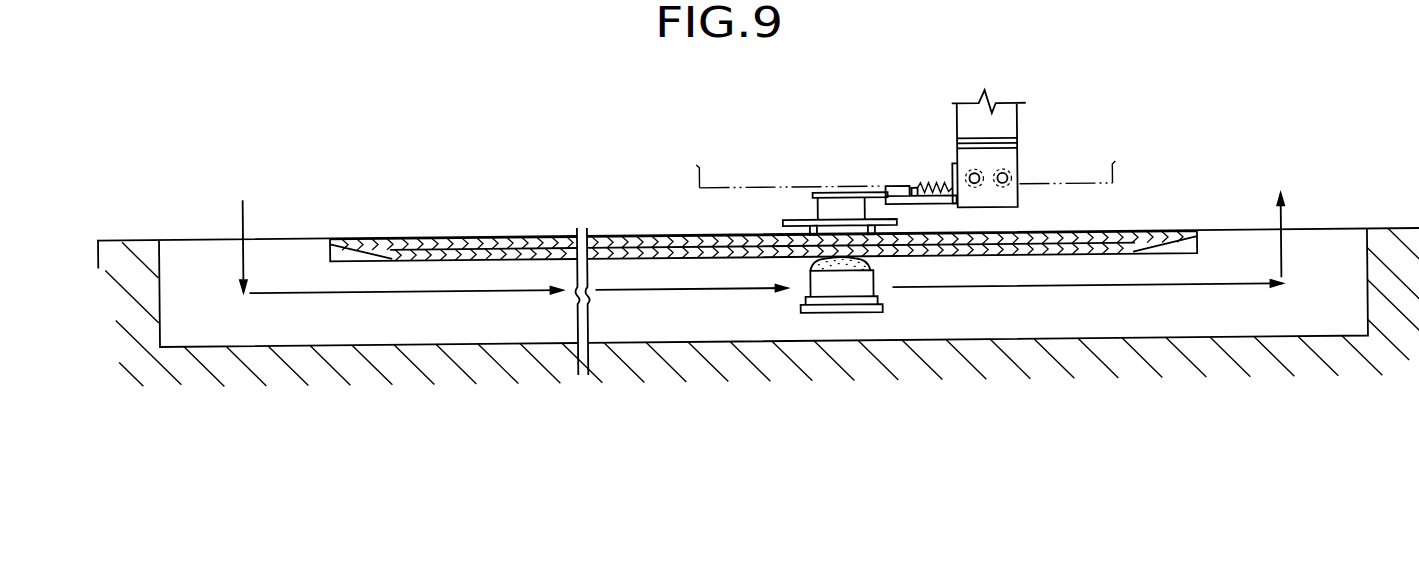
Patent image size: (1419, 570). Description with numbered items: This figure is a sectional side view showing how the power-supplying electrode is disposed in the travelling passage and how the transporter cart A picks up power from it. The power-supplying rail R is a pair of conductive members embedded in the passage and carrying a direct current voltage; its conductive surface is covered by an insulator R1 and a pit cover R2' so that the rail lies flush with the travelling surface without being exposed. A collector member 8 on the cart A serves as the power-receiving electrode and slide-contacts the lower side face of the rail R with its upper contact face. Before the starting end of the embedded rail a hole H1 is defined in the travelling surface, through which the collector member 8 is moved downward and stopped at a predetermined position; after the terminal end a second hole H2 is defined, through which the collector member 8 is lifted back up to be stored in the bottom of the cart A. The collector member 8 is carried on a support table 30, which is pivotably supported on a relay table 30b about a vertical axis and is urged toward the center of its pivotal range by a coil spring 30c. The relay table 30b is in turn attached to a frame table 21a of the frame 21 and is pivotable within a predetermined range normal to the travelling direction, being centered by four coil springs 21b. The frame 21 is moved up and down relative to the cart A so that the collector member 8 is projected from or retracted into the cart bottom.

The collector member 8 is at (872, 268).
The frame 21 is at (1020, 118).
The frame table 21a is at (960, 146).
The coil springs 21b is at (1012, 183).
The support table 30 is at (803, 311).
The relay table 30b is at (888, 193).
The coil spring 30c is at (935, 192).
The transporter cart A is at (722, 196).
The hole H1 is at (158, 268).
The hole H2 is at (1367, 259).
The power-supplying rail R is at (1135, 263).
The insulator R1 is at (402, 246).
The pit cover R2' is at (841, 202).